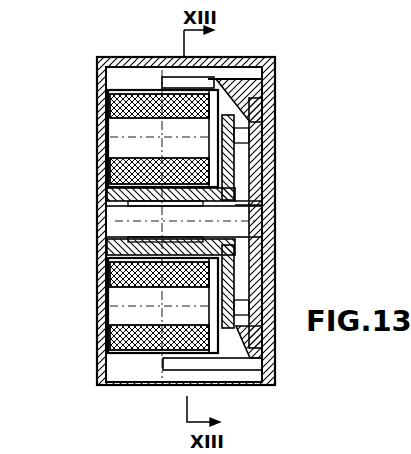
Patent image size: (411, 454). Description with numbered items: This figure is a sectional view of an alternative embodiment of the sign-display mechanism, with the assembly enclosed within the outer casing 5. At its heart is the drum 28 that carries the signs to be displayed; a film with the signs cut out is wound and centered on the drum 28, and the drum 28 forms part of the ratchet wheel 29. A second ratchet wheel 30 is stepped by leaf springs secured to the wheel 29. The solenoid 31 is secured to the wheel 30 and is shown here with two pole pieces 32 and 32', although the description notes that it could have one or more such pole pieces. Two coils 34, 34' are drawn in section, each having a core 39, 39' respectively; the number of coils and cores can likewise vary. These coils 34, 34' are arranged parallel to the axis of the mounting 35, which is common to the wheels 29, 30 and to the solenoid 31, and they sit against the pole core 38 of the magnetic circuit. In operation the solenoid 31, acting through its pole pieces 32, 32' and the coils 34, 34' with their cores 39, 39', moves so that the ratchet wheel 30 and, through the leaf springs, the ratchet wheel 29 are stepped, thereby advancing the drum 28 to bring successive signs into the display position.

The casing 5 is at (275, 373).
The drum 28 is at (204, 88).
The ratchet wheel 29 is at (268, 92).
The ratchet wheel 30 is at (262, 167).
The solenoid 31 is at (262, 198).
The pole piece 32 is at (271, 286).
The pole piece 32' is at (275, 157).
The coil 34 is at (127, 314).
The coil 34' is at (125, 138).
The mounting 35 is at (118, 223).
The pole core 38 is at (110, 247).
The core 39 is at (131, 305).
The core 39' is at (130, 138).